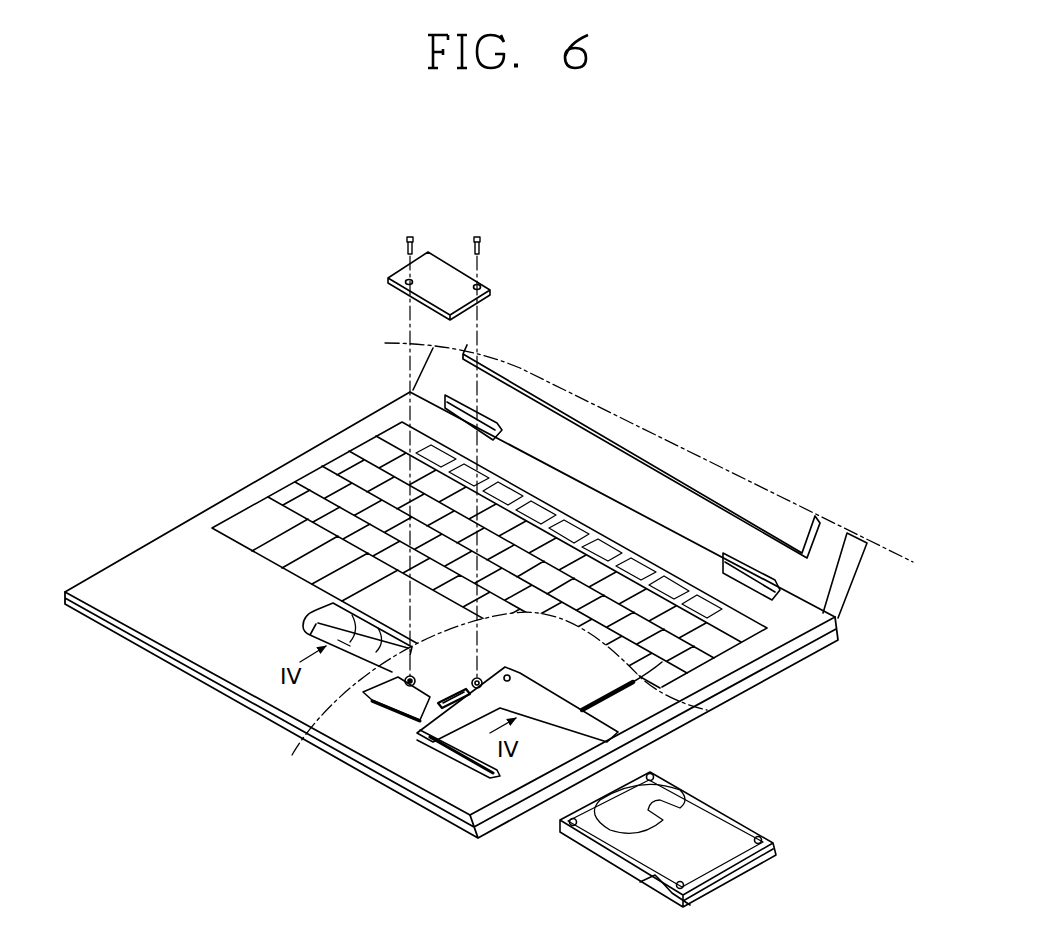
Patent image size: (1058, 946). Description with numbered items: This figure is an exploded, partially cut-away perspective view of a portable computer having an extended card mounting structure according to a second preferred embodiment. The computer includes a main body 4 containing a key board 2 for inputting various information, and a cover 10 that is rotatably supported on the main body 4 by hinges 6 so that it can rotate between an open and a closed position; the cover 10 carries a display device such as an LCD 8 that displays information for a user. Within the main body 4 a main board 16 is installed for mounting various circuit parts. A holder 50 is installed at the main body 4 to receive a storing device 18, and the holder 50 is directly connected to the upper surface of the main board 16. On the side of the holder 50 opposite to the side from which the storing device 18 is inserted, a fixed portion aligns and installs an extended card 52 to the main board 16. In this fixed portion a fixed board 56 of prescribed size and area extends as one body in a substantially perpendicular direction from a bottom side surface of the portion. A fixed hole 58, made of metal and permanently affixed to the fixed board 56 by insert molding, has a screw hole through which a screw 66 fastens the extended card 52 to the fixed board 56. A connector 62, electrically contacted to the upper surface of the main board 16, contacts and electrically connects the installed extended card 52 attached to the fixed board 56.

The key board 2 is at (293, 497).
The main body 4 is at (176, 514).
The hinges 6 is at (840, 620).
The LCD 8 is at (796, 527).
The cover 10 is at (851, 565).
The main board 16 is at (627, 687).
The storing device 18 is at (723, 830).
The holder 50 is at (430, 737).
The extended card 52 is at (435, 268).
The fixed board 56 is at (402, 712).
The fixed hole 58 is at (372, 700).
The connector 62 is at (464, 702).
The screw 66 is at (483, 245).